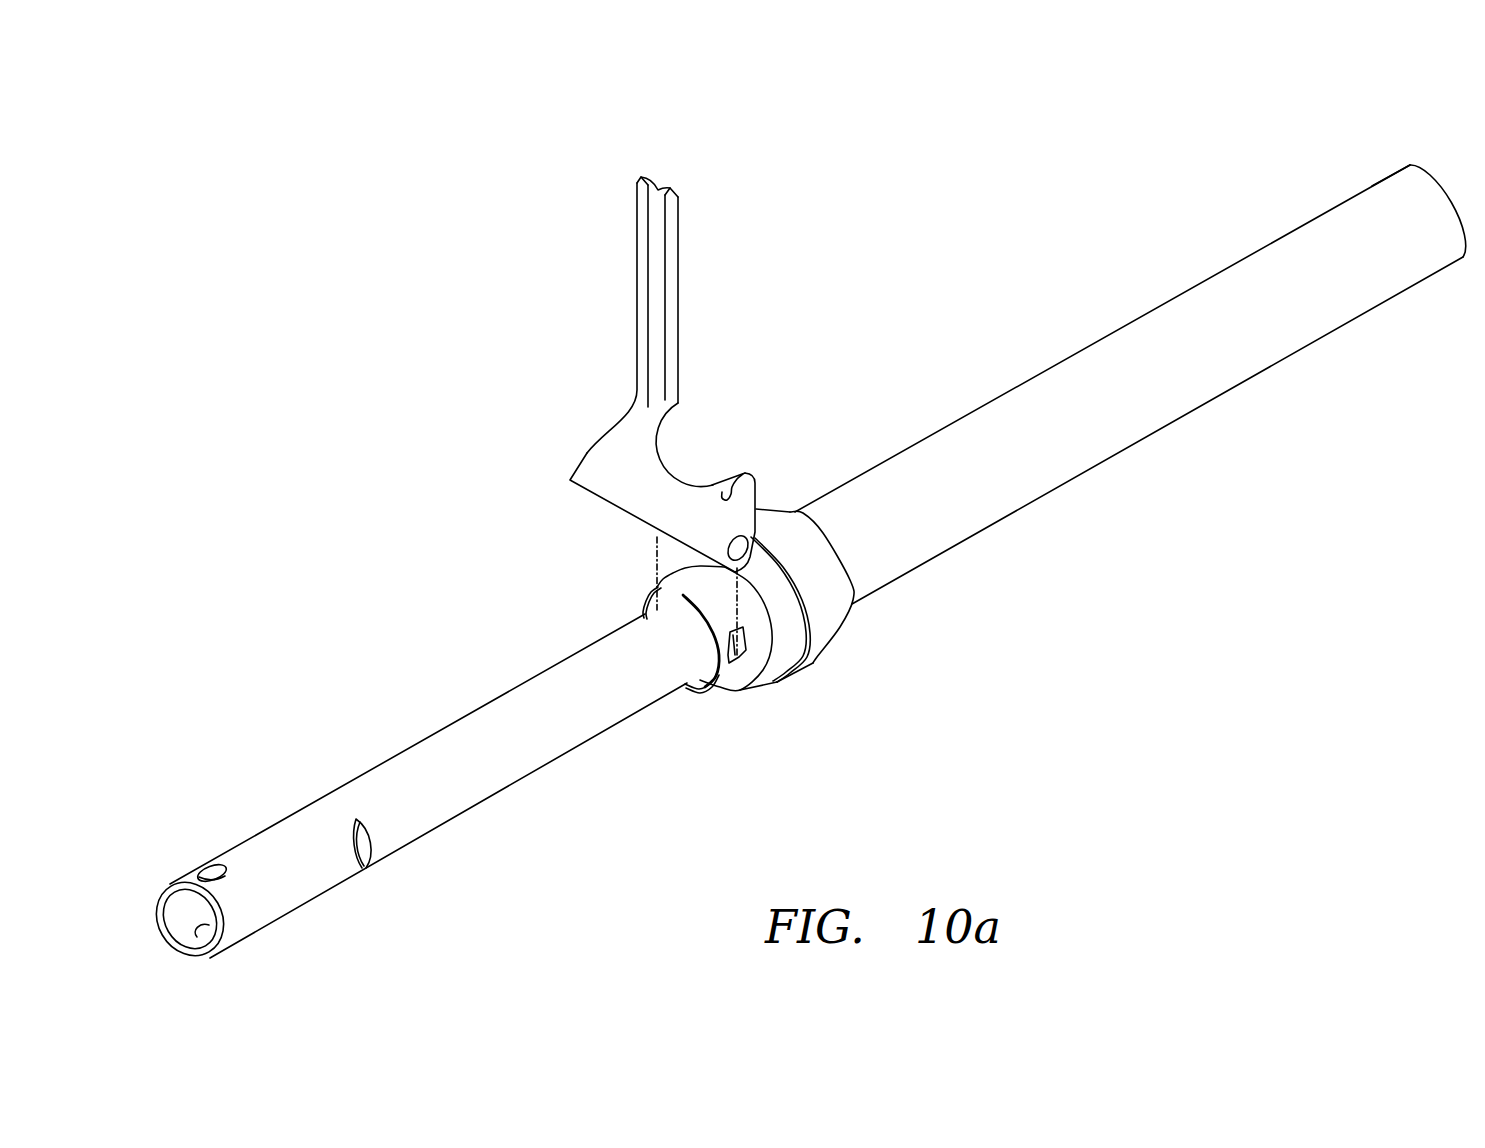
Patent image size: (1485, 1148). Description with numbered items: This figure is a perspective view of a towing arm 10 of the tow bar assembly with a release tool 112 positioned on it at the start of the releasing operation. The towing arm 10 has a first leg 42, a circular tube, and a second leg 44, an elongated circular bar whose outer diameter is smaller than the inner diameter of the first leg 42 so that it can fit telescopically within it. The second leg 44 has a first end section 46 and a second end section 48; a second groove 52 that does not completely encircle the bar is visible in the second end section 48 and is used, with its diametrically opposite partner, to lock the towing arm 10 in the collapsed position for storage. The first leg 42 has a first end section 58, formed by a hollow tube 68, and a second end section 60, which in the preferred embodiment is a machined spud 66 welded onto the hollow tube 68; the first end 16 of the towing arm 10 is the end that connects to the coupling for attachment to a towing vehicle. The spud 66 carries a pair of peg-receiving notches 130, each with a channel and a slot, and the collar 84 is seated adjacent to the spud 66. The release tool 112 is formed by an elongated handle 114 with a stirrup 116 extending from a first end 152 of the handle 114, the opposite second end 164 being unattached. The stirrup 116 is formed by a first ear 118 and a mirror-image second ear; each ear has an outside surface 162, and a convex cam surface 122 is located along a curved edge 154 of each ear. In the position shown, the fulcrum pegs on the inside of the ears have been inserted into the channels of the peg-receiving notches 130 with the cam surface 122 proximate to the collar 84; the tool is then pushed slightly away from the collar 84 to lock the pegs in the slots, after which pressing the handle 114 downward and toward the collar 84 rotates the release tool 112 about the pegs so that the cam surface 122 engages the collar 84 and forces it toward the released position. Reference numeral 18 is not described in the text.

The first towing arm 10 is at (1011, 734).
The first end 16 is at (1450, 182).
The proximal end of inner tube 18 is at (164, 893).
The first leg 42 is at (1029, 390).
The second leg 44 is at (407, 753).
The first end section 46 is at (698, 665).
The second end section 48 is at (192, 868).
The second groove 52 is at (362, 868).
The first end section 58 is at (1372, 195).
The second end section 60 is at (791, 512).
The spud 66 is at (843, 613).
The hollow tube 68 is at (1117, 449).
The collar 84 is at (813, 658).
The release tool 112 is at (587, 453).
The handle 114 is at (672, 315).
The stirrup 116 is at (637, 509).
The first ear 118 is at (680, 552).
The cam surface 122 is at (757, 478).
The peg-receiving notch 130 is at (736, 683).
The first end 152 is at (670, 407).
The curved edge 154 is at (737, 472).
The outside surface 162 is at (724, 480).
The second end 164 is at (672, 212).